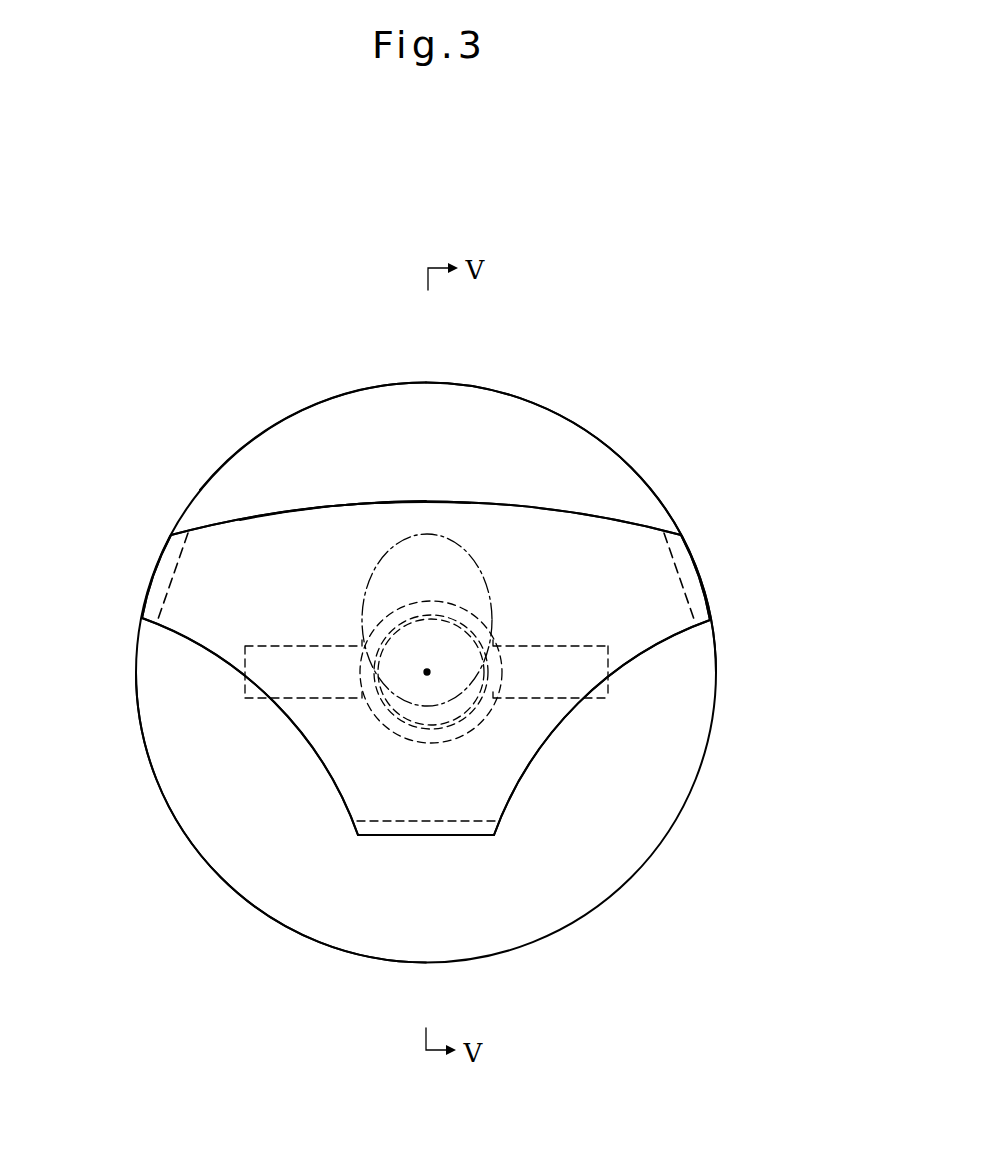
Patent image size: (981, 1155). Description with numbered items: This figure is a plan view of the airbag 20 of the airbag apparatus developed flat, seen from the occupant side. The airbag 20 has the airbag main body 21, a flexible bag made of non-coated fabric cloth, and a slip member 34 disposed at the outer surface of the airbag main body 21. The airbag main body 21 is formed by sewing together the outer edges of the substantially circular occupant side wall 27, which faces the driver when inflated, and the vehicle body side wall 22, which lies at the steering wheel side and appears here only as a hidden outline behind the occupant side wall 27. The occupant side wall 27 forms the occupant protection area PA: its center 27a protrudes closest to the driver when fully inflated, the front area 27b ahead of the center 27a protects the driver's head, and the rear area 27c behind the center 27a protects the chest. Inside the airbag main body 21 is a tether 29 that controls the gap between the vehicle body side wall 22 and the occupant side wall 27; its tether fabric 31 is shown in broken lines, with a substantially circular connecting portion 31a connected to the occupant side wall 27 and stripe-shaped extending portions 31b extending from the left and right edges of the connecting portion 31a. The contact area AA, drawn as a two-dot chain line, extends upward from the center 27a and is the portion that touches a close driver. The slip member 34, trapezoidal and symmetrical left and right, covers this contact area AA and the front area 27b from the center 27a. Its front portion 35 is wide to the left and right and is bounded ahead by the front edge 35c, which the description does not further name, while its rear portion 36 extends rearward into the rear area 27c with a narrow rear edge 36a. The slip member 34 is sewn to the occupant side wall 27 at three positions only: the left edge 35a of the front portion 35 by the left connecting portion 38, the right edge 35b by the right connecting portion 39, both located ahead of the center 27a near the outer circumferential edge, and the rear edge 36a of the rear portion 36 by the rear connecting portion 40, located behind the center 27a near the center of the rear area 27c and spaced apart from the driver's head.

The airbag 20 is at (622, 306).
The airbag main body 21 is at (597, 432).
The vehicle body side wall 22 is at (503, 433).
The occupant side wall 27 is at (467, 420).
The center portion 27a is at (427, 672).
The front area 27b is at (223, 492).
The rear area 27c is at (202, 840).
The tether 29 is at (540, 705).
The tether fabric 31 is at (431, 672).
The connecting portion 31a is at (425, 737).
The extending portion 31b is at (292, 693).
The slip member 34 is at (277, 497).
The front portion 35 is at (600, 535).
The left edge 35a is at (148, 583).
The right edge 35b is at (703, 585).
The upper edge 35c is at (426, 500).
The rear portion 36 is at (331, 782).
The rear edge 36a is at (377, 837).
The left connecting portion 38 is at (177, 560).
The right connecting portion 39 is at (677, 557).
The rear connecting portion 40 is at (468, 837).
The contact area AA is at (362, 602).